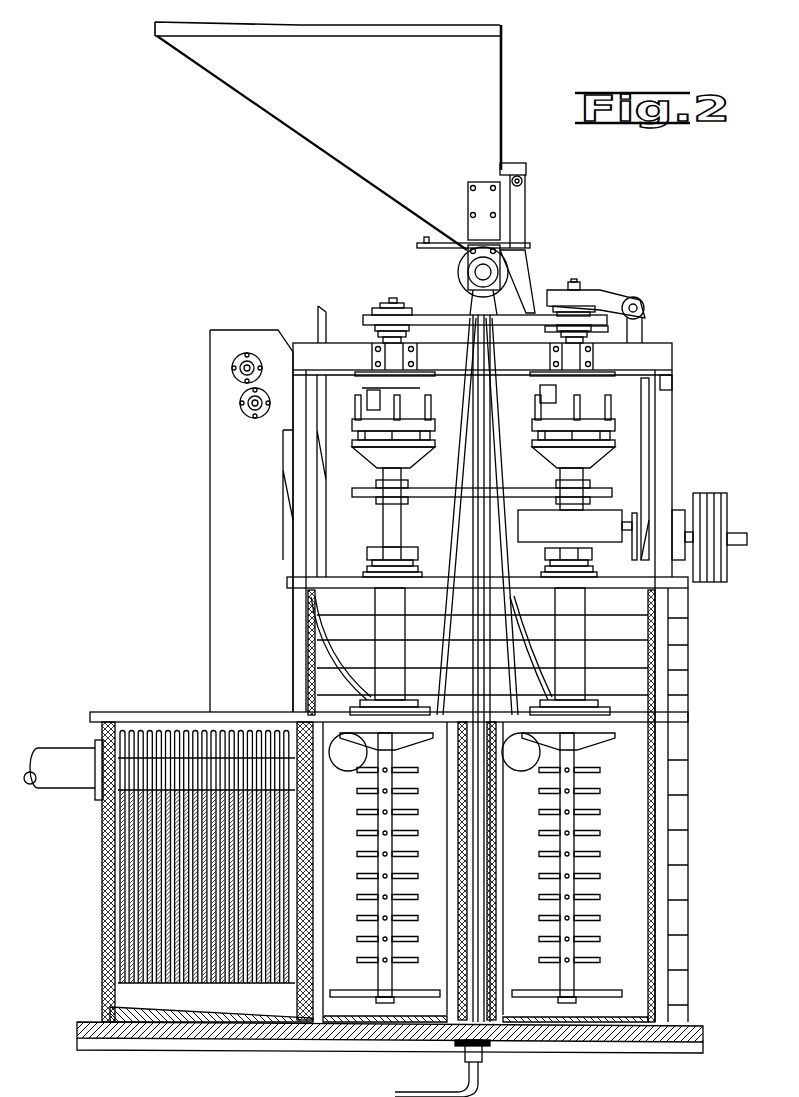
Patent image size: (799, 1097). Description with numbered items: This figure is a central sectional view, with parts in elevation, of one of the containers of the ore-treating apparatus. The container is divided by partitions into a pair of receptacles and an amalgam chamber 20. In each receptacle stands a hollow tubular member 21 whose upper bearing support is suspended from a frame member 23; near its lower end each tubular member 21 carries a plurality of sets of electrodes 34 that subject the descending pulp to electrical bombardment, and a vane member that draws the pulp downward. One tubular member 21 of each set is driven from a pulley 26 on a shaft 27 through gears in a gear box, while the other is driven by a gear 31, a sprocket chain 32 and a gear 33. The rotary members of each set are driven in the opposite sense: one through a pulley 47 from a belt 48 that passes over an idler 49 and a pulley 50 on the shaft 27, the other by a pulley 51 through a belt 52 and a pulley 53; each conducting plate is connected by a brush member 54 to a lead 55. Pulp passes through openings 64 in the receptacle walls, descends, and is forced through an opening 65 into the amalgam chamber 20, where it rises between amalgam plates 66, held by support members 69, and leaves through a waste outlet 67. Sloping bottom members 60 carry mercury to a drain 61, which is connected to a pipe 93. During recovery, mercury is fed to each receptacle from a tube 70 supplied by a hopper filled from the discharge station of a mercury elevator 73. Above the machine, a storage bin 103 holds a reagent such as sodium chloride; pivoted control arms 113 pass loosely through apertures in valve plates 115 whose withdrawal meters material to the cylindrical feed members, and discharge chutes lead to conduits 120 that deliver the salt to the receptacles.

The storage bin 103 is at (503, 158).
The control arm 113 is at (523, 213).
The valve plate 115 is at (530, 245).
The belt 52 is at (465, 303).
The pulley 53 is at (375, 318).
The lead 55 is at (320, 320).
The pulley 47 is at (590, 292).
The belt 48 is at (605, 298).
The idler 49 is at (645, 308).
The pulley 51 is at (610, 330).
The brush member 54 is at (390, 392).
The gear 33 is at (365, 485).
The sprocket chain 32 is at (497, 490).
The gear 31 is at (588, 488).
The pulley 50 is at (648, 512).
The pulley 26 is at (718, 495).
The shaft 27 is at (738, 535).
The frame member 23 is at (690, 588).
The conduit 120 is at (457, 530).
The tube 70 is at (328, 540).
The mercury elevator 73 is at (210, 552).
The support member 69 is at (97, 742).
The waste outlet 67 is at (95, 790).
The amalgam plate 66 is at (120, 932).
The chamber 20 is at (105, 986).
The opening 65 is at (282, 1022).
The bottom member 60 is at (198, 1022).
The drain 61 is at (465, 1045).
The pipe 93 is at (470, 1092).
The opening 64 is at (348, 771).
The hollow tubular member 21 is at (383, 817).
The electrodes 34 is at (357, 875).